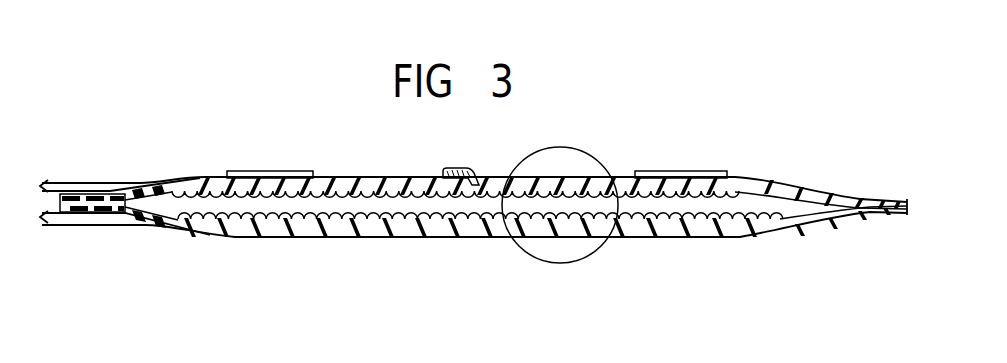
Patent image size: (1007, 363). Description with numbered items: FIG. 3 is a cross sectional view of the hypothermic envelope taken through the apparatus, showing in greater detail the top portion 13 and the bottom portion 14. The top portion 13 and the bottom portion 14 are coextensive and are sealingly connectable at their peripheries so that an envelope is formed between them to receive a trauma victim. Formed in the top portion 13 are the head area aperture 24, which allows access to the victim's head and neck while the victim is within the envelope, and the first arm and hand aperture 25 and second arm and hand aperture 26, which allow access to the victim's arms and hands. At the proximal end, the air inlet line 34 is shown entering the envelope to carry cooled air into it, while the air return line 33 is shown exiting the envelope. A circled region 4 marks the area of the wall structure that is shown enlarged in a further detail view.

The detail region of FIG. 4 is at (592, 152).
The top portion 13 is at (350, 178).
The bottom portion 14 is at (317, 237).
The head area aperture 24 is at (458, 167).
The first arm and hand aperture 25 is at (683, 170).
The second arm and hand aperture 26 is at (264, 170).
The air return line 33 is at (80, 190).
The air inlet line 34 is at (97, 228).